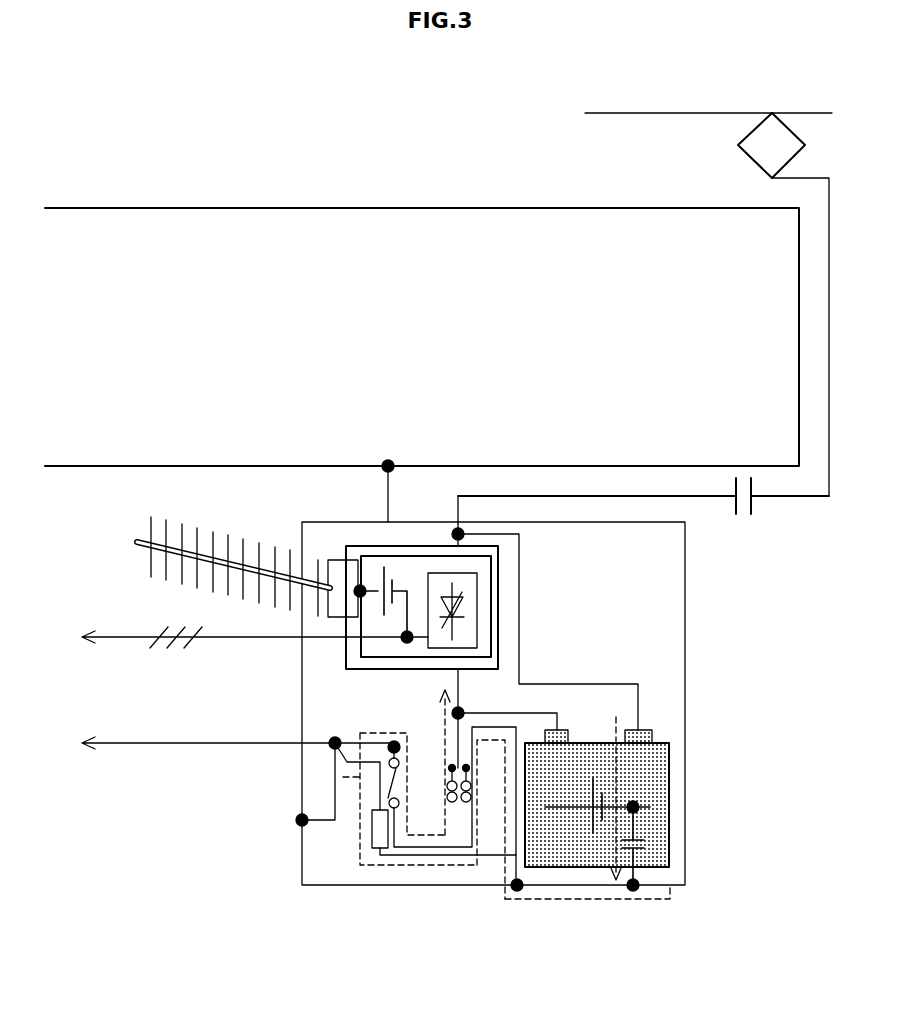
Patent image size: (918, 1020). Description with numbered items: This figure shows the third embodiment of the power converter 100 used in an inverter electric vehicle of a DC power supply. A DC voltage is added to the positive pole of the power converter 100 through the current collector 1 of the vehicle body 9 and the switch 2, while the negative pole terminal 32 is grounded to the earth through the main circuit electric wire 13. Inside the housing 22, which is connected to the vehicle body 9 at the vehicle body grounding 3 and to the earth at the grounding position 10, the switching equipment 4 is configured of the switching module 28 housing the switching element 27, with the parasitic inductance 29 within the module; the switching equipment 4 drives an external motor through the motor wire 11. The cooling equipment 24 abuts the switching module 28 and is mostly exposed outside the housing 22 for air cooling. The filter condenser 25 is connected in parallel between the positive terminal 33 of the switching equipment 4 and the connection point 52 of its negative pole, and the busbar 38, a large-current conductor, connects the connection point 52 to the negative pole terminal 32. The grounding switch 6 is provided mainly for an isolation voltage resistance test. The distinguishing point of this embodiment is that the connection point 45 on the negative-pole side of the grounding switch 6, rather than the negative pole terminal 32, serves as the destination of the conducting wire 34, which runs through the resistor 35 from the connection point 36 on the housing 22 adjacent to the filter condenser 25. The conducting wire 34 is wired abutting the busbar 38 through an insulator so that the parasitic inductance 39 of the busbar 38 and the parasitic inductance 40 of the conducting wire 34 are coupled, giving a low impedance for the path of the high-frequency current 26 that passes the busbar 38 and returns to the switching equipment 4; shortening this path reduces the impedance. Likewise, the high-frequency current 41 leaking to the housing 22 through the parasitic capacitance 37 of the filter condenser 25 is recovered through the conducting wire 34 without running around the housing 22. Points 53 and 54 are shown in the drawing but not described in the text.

The current collector 1 is at (808, 147).
The switch 2 is at (742, 516).
The vehicle body grounding 3 is at (390, 462).
The switching equipment 4 is at (498, 652).
The grounding switch 6 is at (399, 785).
The vehicle body 9 is at (328, 208).
The grounding position 10 is at (300, 825).
The motor wire 11 is at (125, 641).
The main circuit electric wire 13 is at (125, 747).
The housing 22 is at (690, 685).
The cooling equipment 24 is at (133, 543).
The filter condenser 25 is at (669, 818).
The high-frequency current 26 is at (590, 899).
The switching element 27 is at (478, 578).
The switching module 28 is at (491, 611).
The parasitic inductance 29 is at (372, 565).
The negative pole terminal 32 is at (333, 746).
The positive terminal 33 is at (456, 533).
The conducting wire 34 is at (515, 853).
The resistor 35 is at (371, 838).
The connection point 36 is at (518, 888).
The parasitic capacitance 37 is at (645, 848).
The busbar 38 is at (455, 742).
The parasitic inductance 39 is at (447, 790).
The parasitic inductance 40 is at (470, 782).
The high-frequency current 41 is at (617, 760).
The connection point 45 is at (393, 741).
The connection point 52 is at (461, 712).
The connection node 53 is at (635, 888).
The connection node 54 is at (640, 797).
The power converter 100 is at (726, 638).